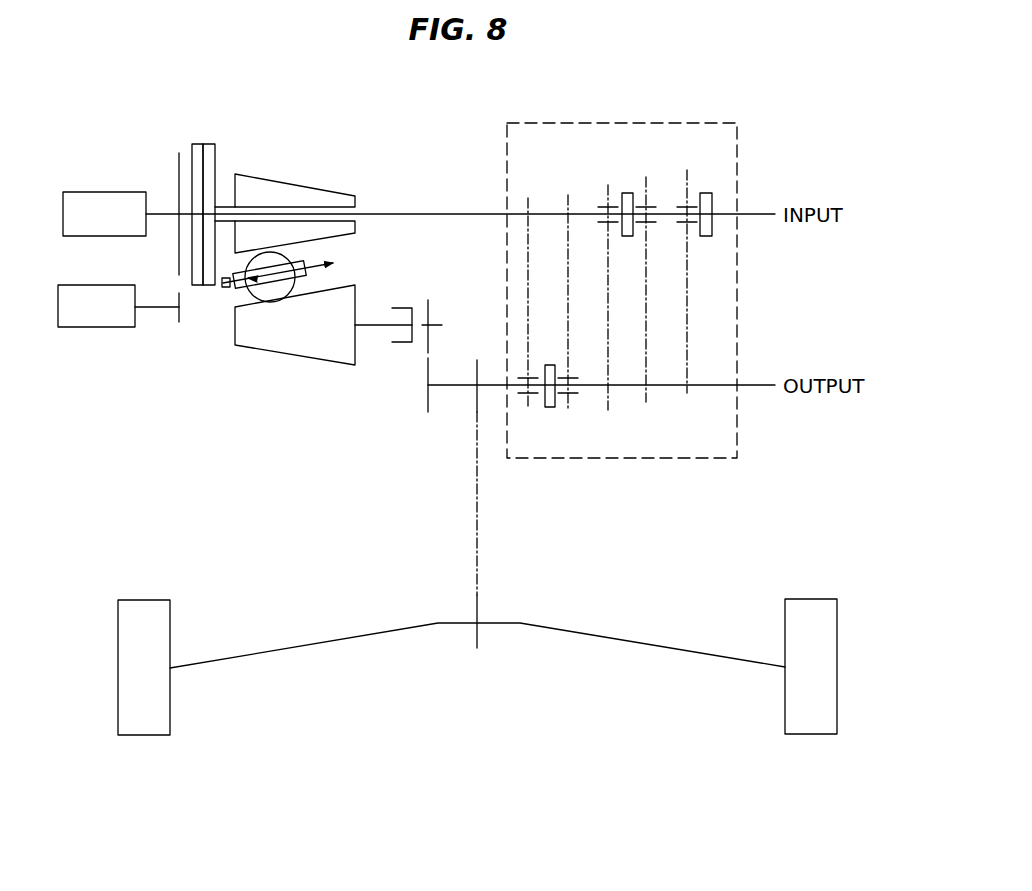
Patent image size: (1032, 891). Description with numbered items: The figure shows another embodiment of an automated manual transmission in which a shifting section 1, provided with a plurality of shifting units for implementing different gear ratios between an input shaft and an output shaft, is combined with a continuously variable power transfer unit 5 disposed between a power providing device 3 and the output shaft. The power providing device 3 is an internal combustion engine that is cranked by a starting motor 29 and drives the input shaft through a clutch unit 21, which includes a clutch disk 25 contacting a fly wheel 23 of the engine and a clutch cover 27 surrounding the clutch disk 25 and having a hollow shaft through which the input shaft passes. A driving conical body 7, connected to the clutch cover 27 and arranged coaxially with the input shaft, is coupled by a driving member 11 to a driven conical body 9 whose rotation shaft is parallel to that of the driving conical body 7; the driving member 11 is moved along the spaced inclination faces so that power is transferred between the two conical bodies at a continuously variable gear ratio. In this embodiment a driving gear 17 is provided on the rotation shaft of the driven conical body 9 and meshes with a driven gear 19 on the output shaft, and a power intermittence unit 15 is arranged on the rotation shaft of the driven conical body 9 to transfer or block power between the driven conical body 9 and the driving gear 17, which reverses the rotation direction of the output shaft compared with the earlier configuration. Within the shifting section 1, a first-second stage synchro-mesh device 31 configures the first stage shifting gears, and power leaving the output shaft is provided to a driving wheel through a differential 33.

The shifting section 1 is at (622, 336).
The power providing device 3 is at (79, 193).
The continuously variable power transfer unit 5 is at (292, 257).
The driving conical body 7 is at (330, 193).
The driven conical body 9 is at (330, 348).
The driving member 11 is at (270, 294).
The power intermittence unit 15 is at (399, 344).
The driving gear 17 is at (428, 312).
The driven gear 19 is at (428, 404).
The clutch unit 21 is at (197, 298).
The fly wheel 23 is at (179, 158).
The clutch disk 25 is at (197, 145).
The clutch cover 27 is at (218, 160).
The starting motor 29 is at (95, 330).
The first-second stage synchro-mesh device 31 is at (548, 408).
The differential 33 is at (440, 601).